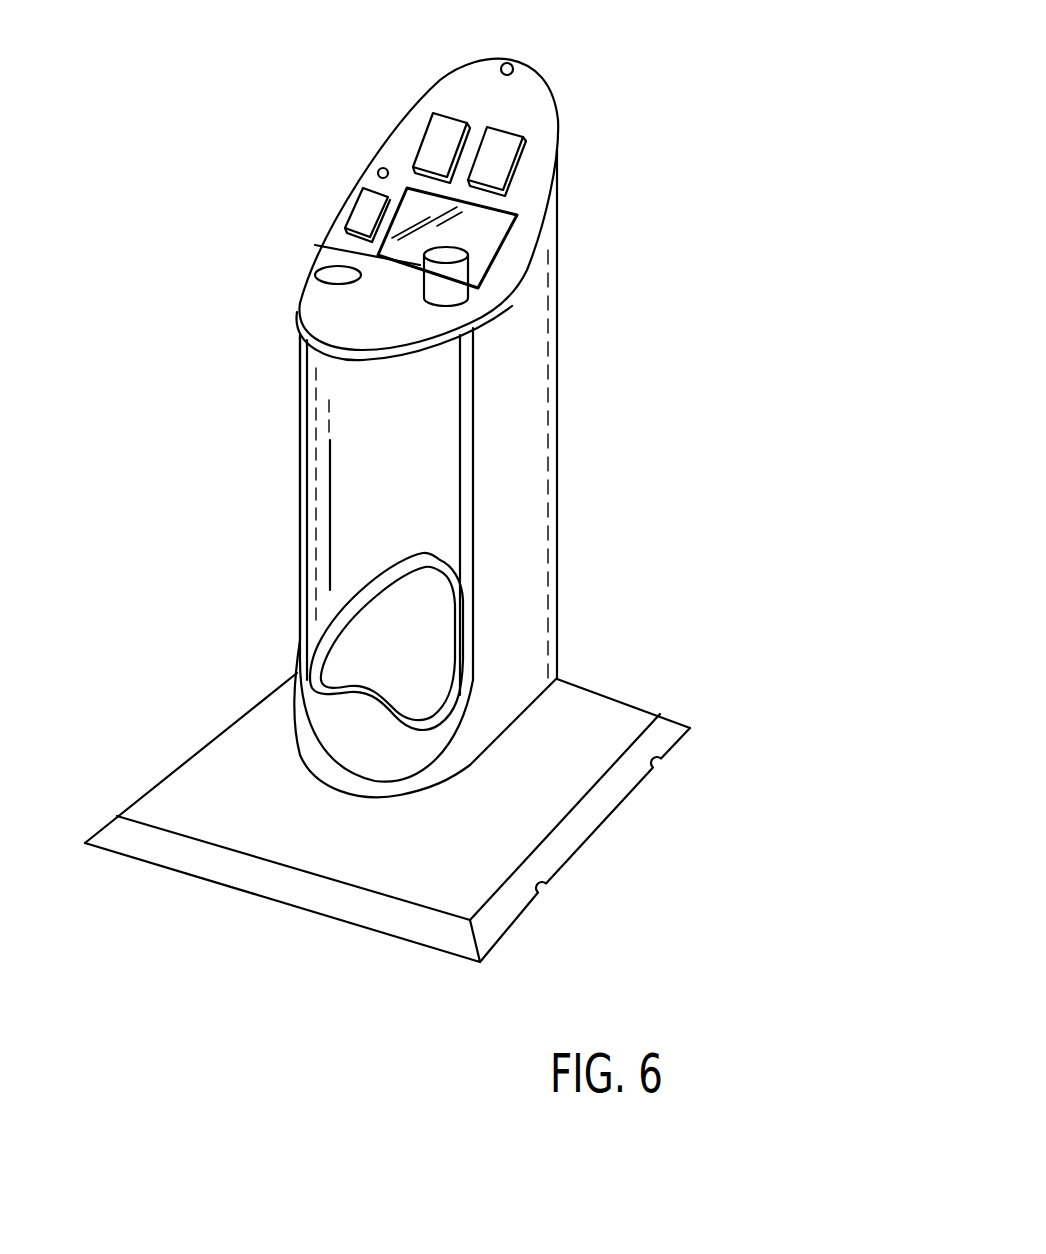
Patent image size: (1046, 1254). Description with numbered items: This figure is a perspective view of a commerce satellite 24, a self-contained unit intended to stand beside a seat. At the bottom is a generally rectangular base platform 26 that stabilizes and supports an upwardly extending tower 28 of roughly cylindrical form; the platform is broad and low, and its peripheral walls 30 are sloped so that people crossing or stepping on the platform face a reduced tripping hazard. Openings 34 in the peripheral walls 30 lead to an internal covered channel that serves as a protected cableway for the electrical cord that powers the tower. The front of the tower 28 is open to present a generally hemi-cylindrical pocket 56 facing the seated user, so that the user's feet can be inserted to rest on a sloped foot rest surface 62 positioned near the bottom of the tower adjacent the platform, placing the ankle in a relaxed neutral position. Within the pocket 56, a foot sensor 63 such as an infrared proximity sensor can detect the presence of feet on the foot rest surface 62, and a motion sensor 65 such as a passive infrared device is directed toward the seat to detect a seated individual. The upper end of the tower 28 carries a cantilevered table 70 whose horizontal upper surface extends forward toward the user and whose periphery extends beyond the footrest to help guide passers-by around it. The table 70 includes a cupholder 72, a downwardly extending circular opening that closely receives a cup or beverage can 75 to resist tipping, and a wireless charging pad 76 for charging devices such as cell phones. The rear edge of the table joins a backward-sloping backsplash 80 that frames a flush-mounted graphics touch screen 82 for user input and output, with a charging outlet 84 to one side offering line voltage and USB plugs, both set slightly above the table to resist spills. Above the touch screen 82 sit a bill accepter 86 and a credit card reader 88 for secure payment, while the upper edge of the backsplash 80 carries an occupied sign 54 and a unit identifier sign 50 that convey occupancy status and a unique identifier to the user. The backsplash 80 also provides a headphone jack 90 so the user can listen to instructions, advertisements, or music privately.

The commerce satellite 24 is at (746, 99).
The base platform 26 is at (622, 710).
The tower 28 is at (538, 490).
The peripheral walls 30 is at (492, 918).
The openings 34 is at (668, 770).
The unit identifier sign 50 is at (507, 63).
The occupied sign 54 is at (437, 76).
The pocket 56 is at (446, 382).
The foot rest surface 62 is at (398, 588).
The foot sensor 63 is at (337, 523).
The motion sensor 65 is at (450, 477).
The table 70 is at (306, 306).
The cupholder 72 is at (447, 300).
The cup or beverage can 75 is at (470, 280).
The wireless charging pad 76 is at (333, 265).
The backsplash 80 is at (540, 174).
The graphics touch screen 82 is at (478, 248).
The charging outlet 84 is at (360, 205).
The bill accepter 86 is at (503, 152).
The credit card reader 88 is at (433, 130).
The headphone jack 90 is at (378, 170).